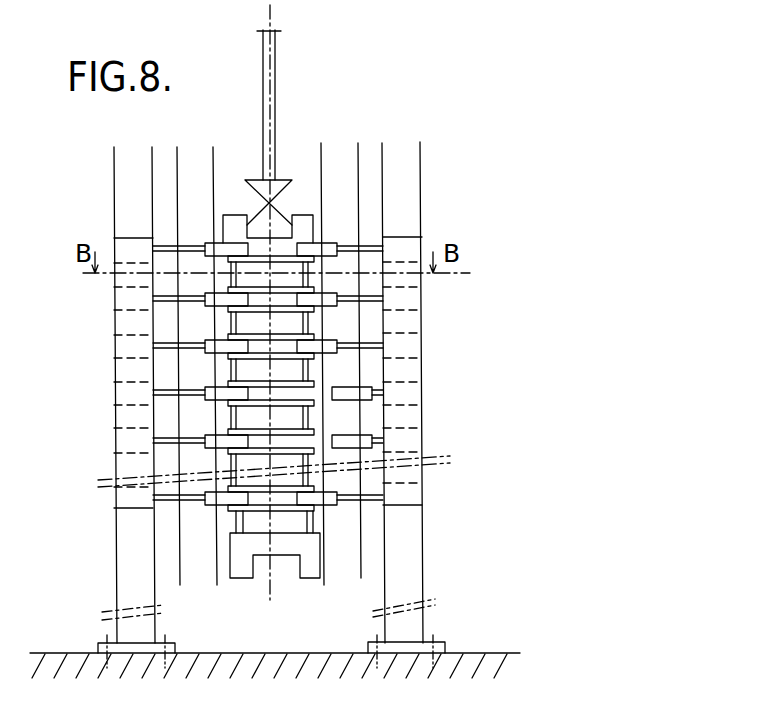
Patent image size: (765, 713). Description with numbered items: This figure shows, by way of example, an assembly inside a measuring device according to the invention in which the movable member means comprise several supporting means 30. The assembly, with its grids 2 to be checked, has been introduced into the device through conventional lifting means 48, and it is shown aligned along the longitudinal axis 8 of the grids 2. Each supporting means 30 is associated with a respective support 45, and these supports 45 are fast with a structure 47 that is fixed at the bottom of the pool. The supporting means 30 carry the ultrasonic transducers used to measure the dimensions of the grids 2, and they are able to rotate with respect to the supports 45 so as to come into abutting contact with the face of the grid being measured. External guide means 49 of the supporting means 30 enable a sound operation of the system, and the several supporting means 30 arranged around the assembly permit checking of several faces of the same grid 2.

The grid 2 is at (260, 387).
The longitudinal axis 8 is at (272, 606).
The supporting means 30 is at (327, 297).
The support 45 is at (380, 388).
The structure 47 is at (125, 301).
The lifting means 48 is at (272, 80).
The external guide means 49 is at (188, 185).